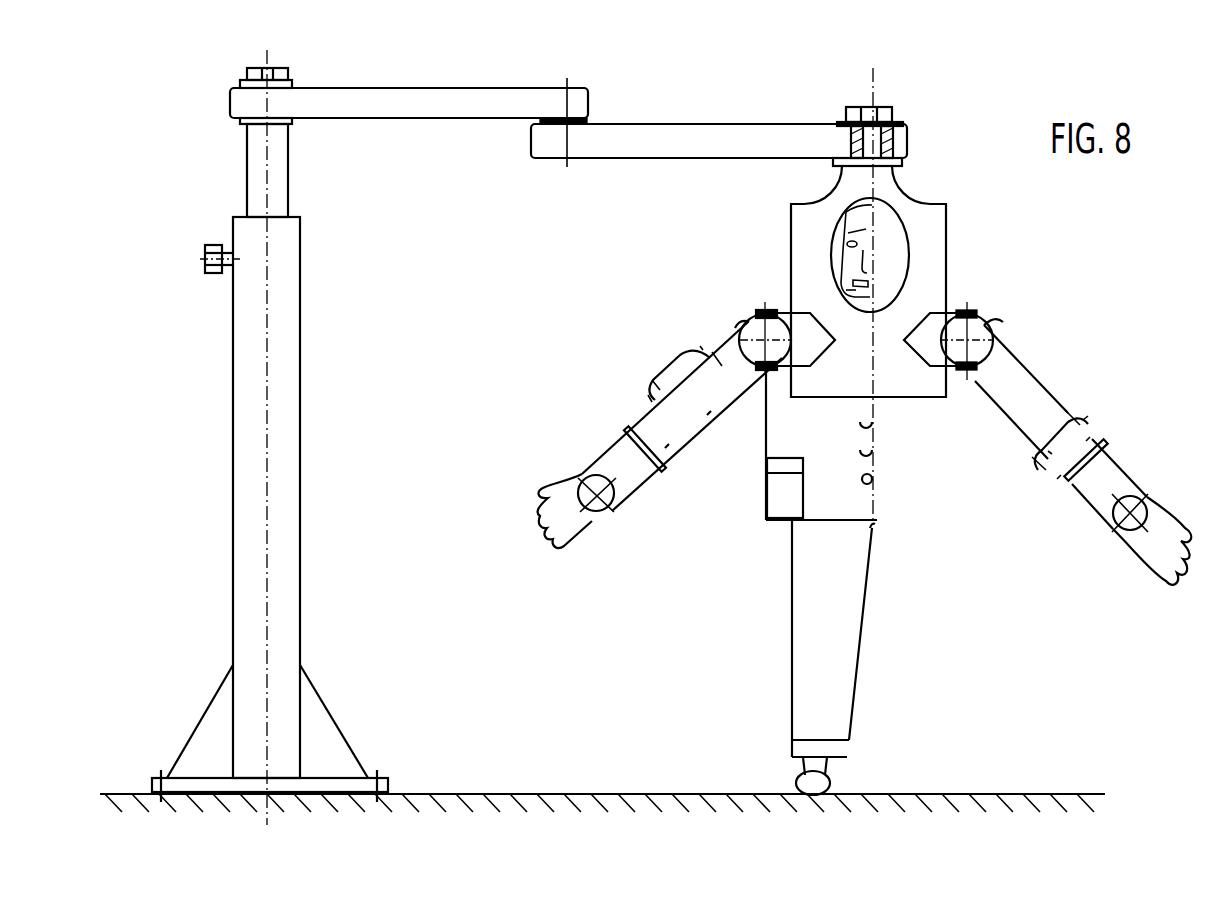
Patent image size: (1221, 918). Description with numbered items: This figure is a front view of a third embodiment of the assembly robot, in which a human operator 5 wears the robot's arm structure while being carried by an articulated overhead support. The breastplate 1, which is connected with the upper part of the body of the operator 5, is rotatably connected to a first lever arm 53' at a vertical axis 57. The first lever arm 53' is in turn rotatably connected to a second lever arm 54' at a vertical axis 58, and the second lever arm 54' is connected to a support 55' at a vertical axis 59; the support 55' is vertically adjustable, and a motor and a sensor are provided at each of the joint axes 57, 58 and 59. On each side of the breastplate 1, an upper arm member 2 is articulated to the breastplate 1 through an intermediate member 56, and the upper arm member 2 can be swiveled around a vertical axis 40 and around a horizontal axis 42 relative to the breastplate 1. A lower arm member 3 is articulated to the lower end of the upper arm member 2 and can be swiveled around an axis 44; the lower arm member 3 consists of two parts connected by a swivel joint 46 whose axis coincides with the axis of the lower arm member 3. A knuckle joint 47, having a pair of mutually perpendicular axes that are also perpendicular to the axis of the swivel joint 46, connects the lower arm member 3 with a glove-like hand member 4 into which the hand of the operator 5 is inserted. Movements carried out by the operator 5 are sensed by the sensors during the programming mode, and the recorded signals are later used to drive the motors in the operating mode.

The breastplate 1 is at (930, 212).
The upper arm member 2 is at (1050, 375).
The lower arm member 3 is at (1083, 502).
The hand member 4 is at (1132, 553).
The human operator 5 is at (768, 433).
The vertical axis 40 is at (972, 303).
The horizontal axis 42 is at (982, 332).
The axis 44 is at (1030, 447).
The swivel joint 46 is at (1105, 443).
The knuckle joint 47 is at (1147, 507).
The first lever arm 53' is at (719, 119).
The second lever arm 54' is at (409, 136).
The support 55' is at (270, 437).
The intermediate member 56 is at (983, 340).
The vertical axis 57 is at (875, 78).
The vertical axis 58 is at (568, 80).
The vertical axis 59 is at (268, 57).